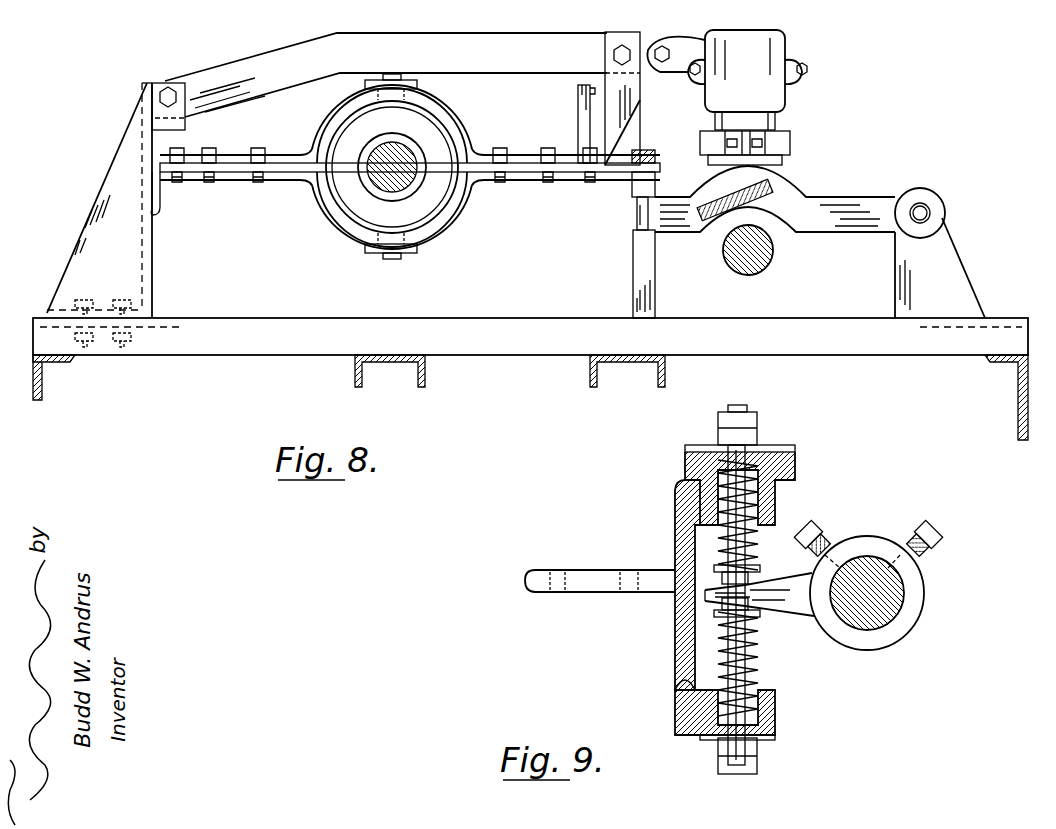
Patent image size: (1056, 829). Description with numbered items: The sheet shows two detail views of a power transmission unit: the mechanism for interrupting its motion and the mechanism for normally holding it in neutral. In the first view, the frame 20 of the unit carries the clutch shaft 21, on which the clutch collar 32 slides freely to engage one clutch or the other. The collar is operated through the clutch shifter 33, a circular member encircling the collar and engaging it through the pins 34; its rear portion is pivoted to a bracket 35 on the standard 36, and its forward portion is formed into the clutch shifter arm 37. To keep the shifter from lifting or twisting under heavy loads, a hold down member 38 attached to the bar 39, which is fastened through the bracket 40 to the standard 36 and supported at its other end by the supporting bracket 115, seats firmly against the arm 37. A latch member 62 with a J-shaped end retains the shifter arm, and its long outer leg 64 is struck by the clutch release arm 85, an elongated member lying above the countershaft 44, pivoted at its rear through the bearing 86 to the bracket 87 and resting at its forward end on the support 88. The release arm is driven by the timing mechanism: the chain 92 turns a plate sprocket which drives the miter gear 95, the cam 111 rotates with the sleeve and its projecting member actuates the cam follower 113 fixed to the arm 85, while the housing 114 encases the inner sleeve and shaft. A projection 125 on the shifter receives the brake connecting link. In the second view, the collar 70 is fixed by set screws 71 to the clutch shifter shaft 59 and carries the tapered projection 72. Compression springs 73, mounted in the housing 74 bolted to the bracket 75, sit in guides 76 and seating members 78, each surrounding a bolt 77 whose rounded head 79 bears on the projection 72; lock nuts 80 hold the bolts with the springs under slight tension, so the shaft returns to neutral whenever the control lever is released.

In FIG. 8, the frame 20 is at (210, 352).
In FIG. 8, the clutch shaft 21 is at (408, 160).
In FIG. 8, the clutch collar 32 is at (425, 207).
In FIG. 8, the clutch shifter 33 is at (462, 110).
In FIG. 8, the pins 34 is at (392, 78).
In FIG. 8, the bracket 35 is at (160, 208).
In FIG. 8, the standard 36 is at (153, 255).
In FIG. 8, the clutch shifter arm 37 is at (614, 176).
In FIG. 8, the hold down member 38 is at (640, 128).
In FIG. 8, the bar 39 is at (268, 60).
In FIG. 8, the bracket 40 is at (185, 122).
In FIG. 8, the countershaft 44 is at (770, 258).
In FIG. 8, the latch member 62 is at (650, 148).
In FIG. 8, the outer leg 64 is at (655, 185).
In FIG. 8, the clutch release arm 85 is at (855, 202).
In FIG. 8, the bearing 86 is at (935, 195).
In FIG. 8, the bracket 87 is at (958, 253).
In FIG. 8, the support 88 is at (633, 273).
In FIG. 8, the miter gear 95 is at (783, 160).
In FIG. 8, the cam 111 is at (792, 136).
In FIG. 8, the cam follower 113 is at (780, 182).
In FIG. 8, the housing 114 is at (776, 120).
In FIG. 8, the supporting bracket 115 is at (786, 38).
In FIG. 8, the projection 125 is at (578, 126).
In FIG. 9, the clutch shifter shaft 59 is at (890, 606).
In FIG. 9, the collar 70 is at (924, 581).
In FIG. 9, the set screws 71 is at (908, 532).
In FIG. 9, the tapered projection 72 is at (790, 612).
In FIG. 9, the compression springs 73 is at (760, 555).
In FIG. 9, the housing 74 is at (680, 506).
In FIG. 9, the bracket 75 is at (590, 568).
In FIG. 9, the guides 76 is at (778, 495).
In FIG. 9, the bolt 77 is at (758, 545).
In FIG. 9, the seating members 78 is at (762, 568).
In FIG. 9, the head 79 is at (720, 574).
In FIG. 9, the lock nuts 80 is at (758, 415).
In FIG. 9, the chain 92 is at (770, 446).